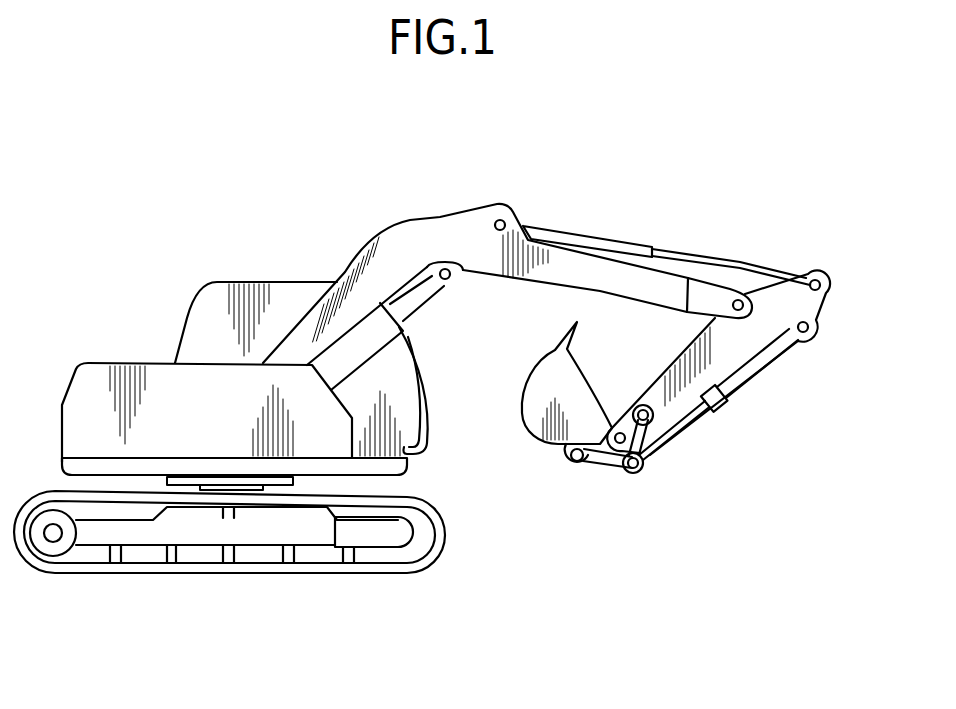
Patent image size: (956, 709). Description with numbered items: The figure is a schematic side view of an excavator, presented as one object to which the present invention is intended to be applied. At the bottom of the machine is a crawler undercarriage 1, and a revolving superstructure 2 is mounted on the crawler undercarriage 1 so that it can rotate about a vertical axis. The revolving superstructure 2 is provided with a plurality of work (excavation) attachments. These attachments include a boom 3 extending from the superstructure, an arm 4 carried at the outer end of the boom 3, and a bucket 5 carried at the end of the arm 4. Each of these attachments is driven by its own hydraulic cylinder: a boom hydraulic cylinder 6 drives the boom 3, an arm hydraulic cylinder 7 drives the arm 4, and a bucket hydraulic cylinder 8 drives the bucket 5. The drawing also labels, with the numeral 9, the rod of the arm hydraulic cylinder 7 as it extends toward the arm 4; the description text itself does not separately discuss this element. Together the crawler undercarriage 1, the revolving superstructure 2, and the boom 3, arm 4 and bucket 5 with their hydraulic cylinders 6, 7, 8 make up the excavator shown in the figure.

The crawler undercarriage 1 is at (333, 572).
The revolving superstructure 2 is at (185, 280).
The boom 3 is at (410, 219).
The arm 4 is at (728, 383).
The bucket 5 is at (527, 427).
The boom hydraulic cylinder 6 is at (418, 318).
The arm hydraulic cylinder 7 is at (597, 237).
The bucket hydraulic cylinder 8 is at (730, 410).
The arm cylinder rod 9 is at (768, 250).